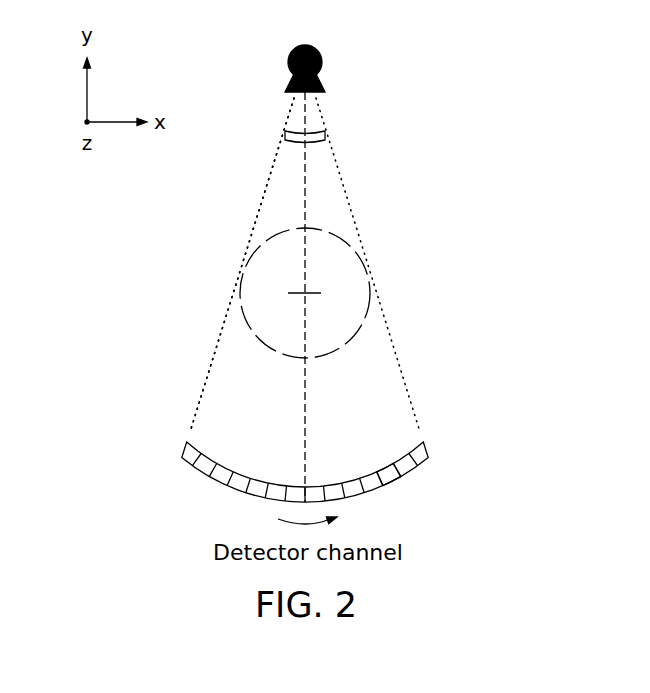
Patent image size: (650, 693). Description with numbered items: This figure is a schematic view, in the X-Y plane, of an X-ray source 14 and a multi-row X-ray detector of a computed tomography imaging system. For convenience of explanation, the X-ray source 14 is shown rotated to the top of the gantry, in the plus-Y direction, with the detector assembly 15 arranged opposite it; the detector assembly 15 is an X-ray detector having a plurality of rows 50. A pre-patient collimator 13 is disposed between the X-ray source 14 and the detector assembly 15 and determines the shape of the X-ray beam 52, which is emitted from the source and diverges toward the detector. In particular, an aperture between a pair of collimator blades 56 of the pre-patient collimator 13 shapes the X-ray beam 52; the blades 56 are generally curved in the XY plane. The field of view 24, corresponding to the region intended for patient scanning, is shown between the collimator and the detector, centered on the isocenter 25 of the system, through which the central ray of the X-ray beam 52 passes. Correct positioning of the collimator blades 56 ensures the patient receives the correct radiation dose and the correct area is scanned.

The pre-patient collimator 13 is at (274, 133).
The X-ray source 14 is at (334, 62).
The detector assembly 15 is at (434, 451).
The field of view 24 is at (243, 317).
The isocenter 25 is at (287, 291).
The rows 50 is at (385, 467).
The X-ray beam 52 is at (189, 412).
The collimator blades 56 is at (331, 134).